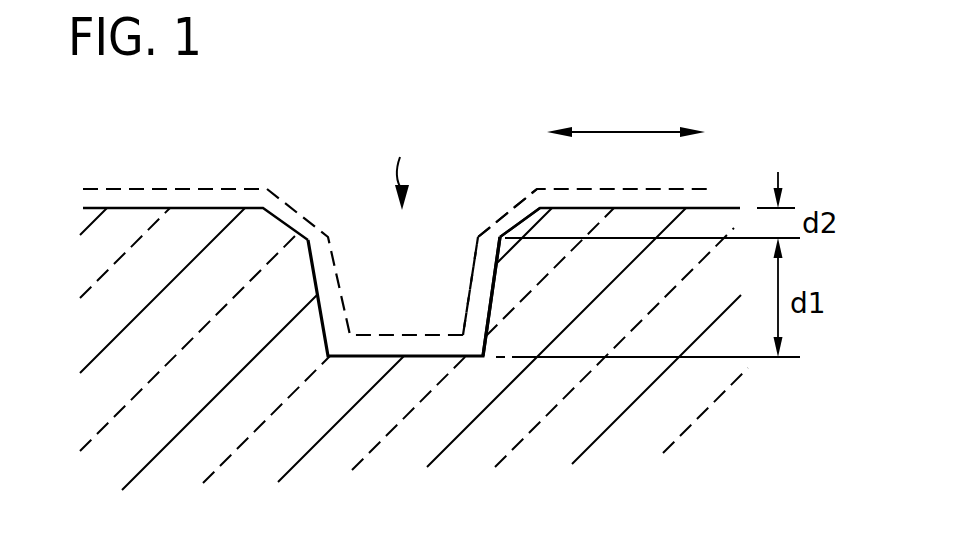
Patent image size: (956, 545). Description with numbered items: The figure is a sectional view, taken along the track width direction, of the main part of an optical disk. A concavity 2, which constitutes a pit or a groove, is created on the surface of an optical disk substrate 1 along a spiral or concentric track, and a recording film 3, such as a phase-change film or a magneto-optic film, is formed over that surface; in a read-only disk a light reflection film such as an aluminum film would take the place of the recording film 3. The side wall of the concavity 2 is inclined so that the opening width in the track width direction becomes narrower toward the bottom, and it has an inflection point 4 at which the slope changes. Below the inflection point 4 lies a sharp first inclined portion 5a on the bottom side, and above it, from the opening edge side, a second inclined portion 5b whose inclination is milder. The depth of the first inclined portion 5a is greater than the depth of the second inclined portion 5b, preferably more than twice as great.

The optical disk substrate 1 is at (700, 405).
The concavity 2 is at (403, 167).
The recording film 3 is at (147, 186).
The inflection point 4 is at (317, 237).
The first inclined portion 5a is at (494, 273).
The second inclined portion 5b is at (519, 218).